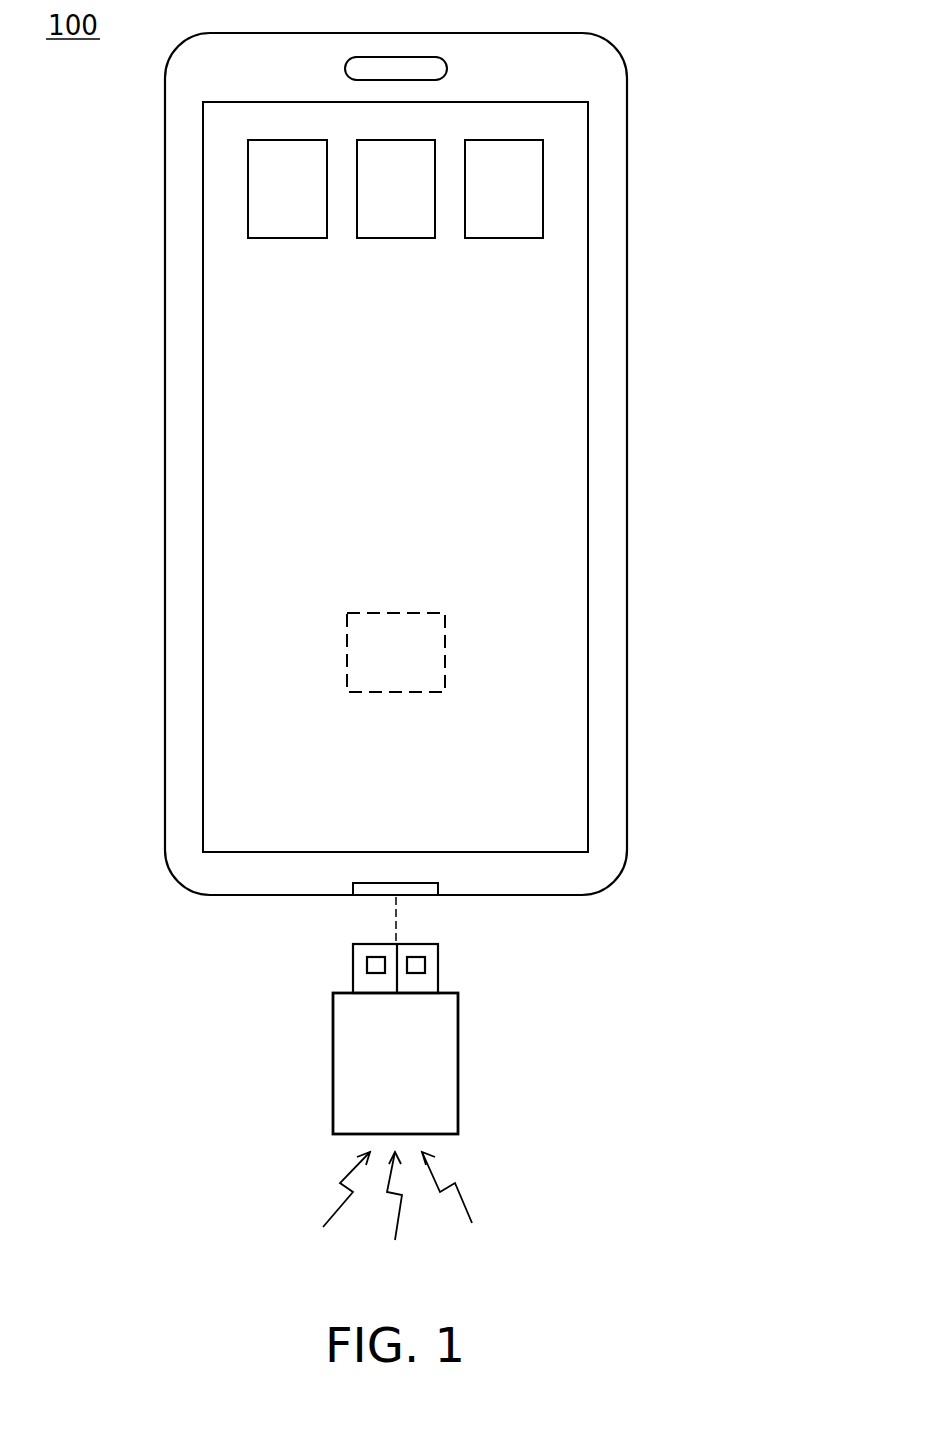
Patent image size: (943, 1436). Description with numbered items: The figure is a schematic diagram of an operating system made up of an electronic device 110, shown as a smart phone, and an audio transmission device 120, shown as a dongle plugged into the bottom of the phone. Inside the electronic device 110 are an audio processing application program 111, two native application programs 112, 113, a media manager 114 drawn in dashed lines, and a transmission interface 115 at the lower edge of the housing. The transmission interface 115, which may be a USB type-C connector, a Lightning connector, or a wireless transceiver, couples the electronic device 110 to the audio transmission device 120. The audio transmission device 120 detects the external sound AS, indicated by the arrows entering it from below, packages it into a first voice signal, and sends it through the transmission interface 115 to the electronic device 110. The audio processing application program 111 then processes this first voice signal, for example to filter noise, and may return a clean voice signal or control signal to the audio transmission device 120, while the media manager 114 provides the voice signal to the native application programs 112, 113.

The electronic device 110 is at (627, 115).
The audio processing application program 111 is at (288, 238).
The native application program 112 is at (397, 238).
The native application program 113 is at (505, 238).
The media manager 114 is at (393, 612).
The transmission interface 115 is at (438, 888).
The audio transmission device 120 is at (458, 1063).
The external sound AS is at (397, 1215).